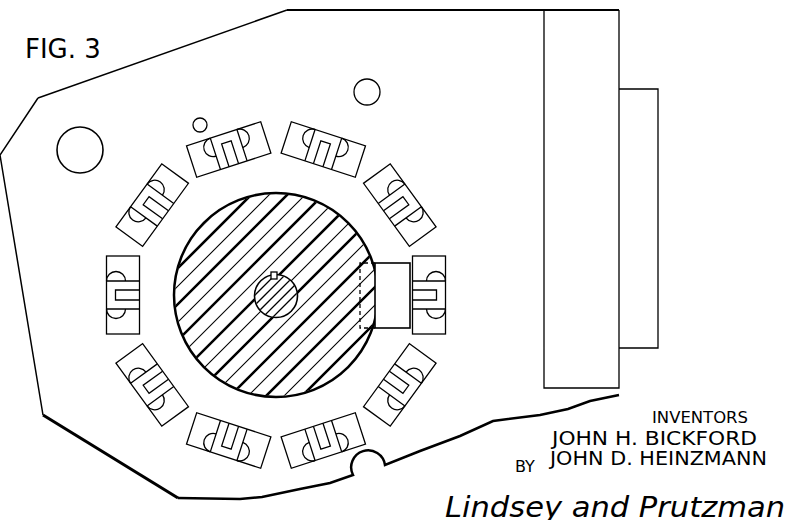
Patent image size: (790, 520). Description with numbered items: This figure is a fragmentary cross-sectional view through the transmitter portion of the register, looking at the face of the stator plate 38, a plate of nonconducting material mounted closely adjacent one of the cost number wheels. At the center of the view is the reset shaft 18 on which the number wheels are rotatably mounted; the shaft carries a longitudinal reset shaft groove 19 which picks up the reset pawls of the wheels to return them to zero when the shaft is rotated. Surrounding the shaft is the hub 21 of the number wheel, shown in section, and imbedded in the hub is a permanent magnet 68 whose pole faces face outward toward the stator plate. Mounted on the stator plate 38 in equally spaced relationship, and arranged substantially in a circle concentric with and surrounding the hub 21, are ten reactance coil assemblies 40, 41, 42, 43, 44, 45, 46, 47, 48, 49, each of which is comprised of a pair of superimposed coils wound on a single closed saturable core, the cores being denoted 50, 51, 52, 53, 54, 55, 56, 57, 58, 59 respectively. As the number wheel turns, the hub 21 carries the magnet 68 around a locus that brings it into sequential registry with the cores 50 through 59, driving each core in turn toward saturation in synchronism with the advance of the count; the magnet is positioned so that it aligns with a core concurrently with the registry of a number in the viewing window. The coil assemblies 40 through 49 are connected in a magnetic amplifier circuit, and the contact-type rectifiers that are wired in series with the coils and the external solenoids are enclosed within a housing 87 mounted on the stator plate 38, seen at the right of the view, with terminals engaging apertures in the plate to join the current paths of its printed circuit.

The stator plate 38 is at (167, 53).
The housing 87 is at (610, 63).
The hub 21 is at (243, 207).
The reset shaft 18 is at (268, 305).
The reset shaft groove 19 is at (273, 276).
The magnet 68 is at (397, 270).
The reactance coil assembly 40 is at (442, 313).
The reactance coil assembly 41 is at (427, 213).
The reactance coil assembly 42 is at (348, 143).
The reactance coil assembly 43 is at (240, 133).
The reactance coil assembly 44 is at (157, 187).
The reactance coil assembly 45 is at (115, 277).
The reactance coil assembly 46 is at (133, 372).
The reactance coil assembly 47 is at (195, 447).
The reactance coil assembly 48 is at (345, 438).
The reactance coil assembly 49 is at (430, 382).
The saturable core 50 is at (433, 282).
The saturable core 51 is at (400, 192).
The saturable core 52 is at (315, 138).
The saturable core 53 is at (217, 143).
The saturable core 54 is at (147, 195).
The saturable core 55 is at (112, 300).
The saturable core 56 is at (145, 393).
The saturable core 57 is at (222, 452).
The saturable core 58 is at (300, 458).
The saturable core 59 is at (418, 392).